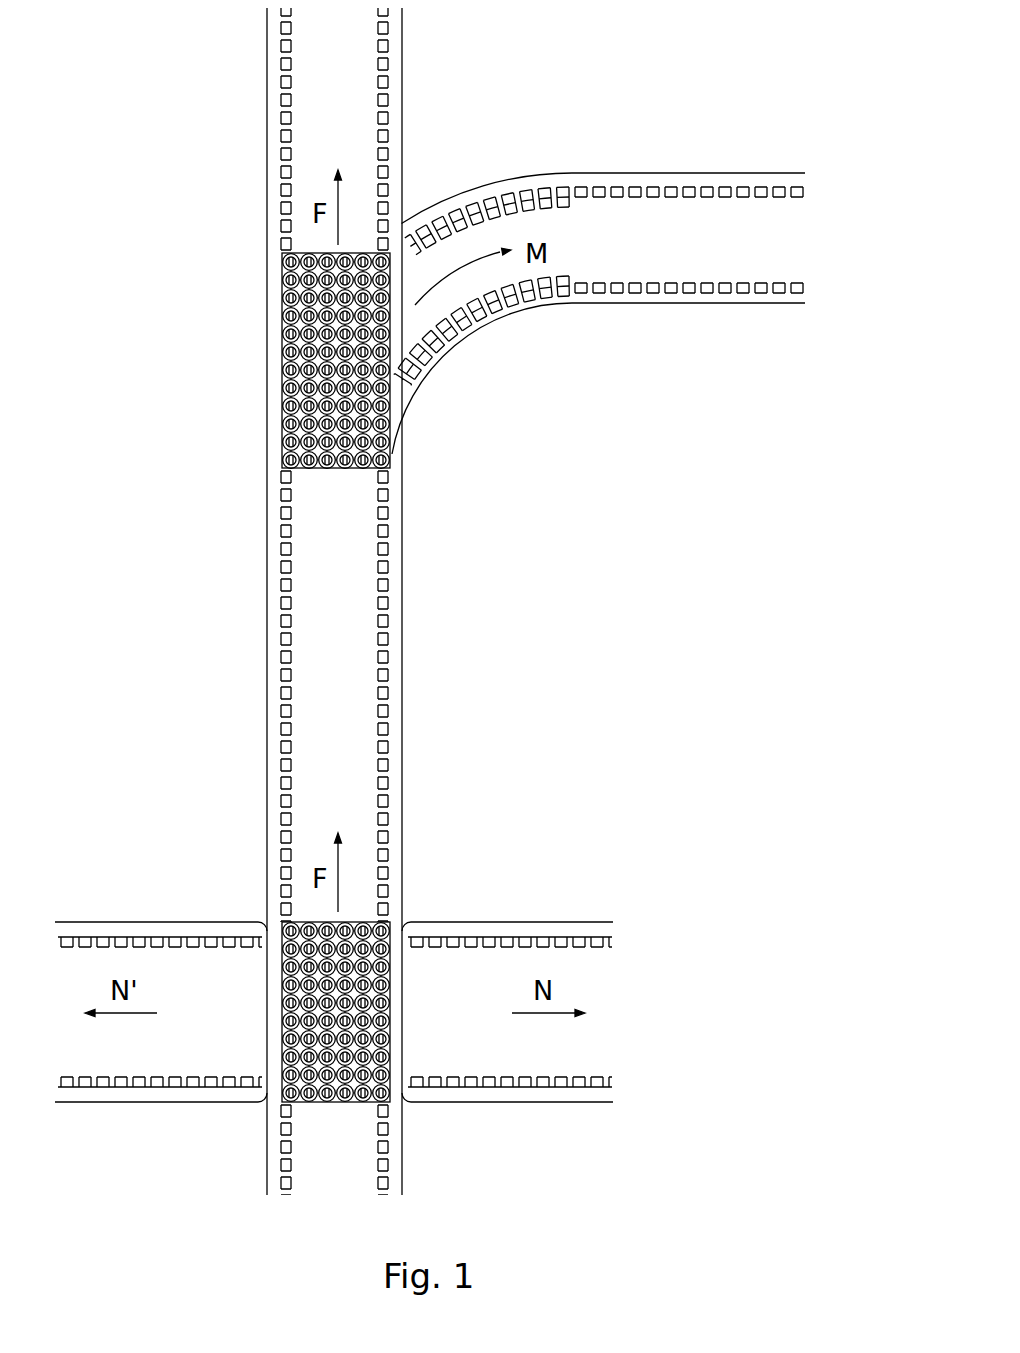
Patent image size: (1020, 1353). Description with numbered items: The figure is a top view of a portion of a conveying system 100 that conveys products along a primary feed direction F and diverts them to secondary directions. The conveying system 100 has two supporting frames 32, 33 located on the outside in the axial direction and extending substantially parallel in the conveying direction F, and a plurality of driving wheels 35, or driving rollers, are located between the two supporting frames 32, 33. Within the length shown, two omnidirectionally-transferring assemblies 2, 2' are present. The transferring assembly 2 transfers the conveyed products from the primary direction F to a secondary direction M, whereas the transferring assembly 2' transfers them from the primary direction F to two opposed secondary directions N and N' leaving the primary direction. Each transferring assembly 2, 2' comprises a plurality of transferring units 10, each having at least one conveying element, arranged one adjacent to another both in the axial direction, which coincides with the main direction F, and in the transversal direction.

The conveying system 100 is at (424, 604).
The transferring assembly 2 is at (283, 360).
The transferring assembly 2' is at (280, 1012).
The transferring unit 10 is at (283, 400).
The supporting frame 32 is at (398, 776).
The supporting frame 33 is at (268, 668).
The driving wheels 35 is at (390, 650).